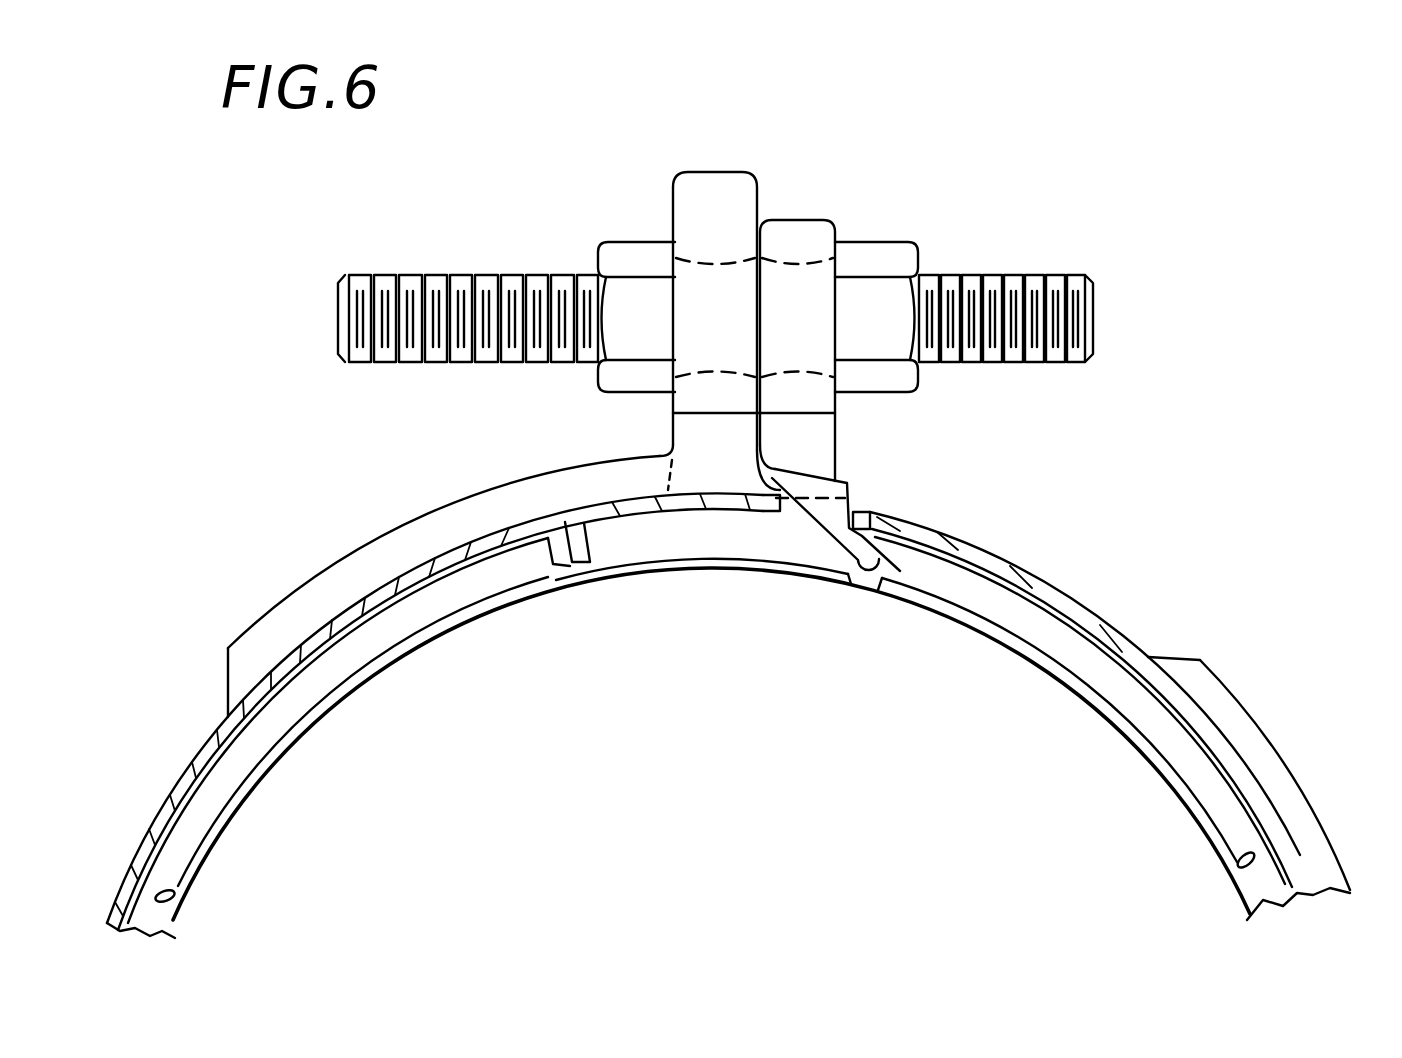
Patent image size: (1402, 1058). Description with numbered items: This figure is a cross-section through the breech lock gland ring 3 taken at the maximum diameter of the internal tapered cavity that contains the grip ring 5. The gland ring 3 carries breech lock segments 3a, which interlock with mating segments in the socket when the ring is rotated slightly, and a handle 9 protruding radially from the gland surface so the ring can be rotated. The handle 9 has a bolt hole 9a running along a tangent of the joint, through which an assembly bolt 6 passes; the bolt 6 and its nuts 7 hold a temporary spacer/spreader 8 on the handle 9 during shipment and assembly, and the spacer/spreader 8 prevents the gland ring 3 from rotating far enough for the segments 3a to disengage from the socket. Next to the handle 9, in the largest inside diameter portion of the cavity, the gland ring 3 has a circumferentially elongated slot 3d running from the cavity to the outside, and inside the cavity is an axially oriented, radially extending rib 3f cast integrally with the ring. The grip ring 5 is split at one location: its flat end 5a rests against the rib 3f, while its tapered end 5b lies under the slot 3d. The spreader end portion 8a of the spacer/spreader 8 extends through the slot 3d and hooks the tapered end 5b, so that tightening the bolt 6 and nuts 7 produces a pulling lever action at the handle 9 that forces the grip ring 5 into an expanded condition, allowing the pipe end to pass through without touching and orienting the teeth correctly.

The gland ring 3 is at (1000, 553).
The breech lock segments 3a is at (318, 603).
The slot 3d is at (777, 508).
The rib 3f is at (580, 565).
The grip ring 5 is at (1043, 630).
The flat end of split grip ring 5a is at (556, 572).
The tapered end of split grip ring 5b is at (892, 577).
The assembly bolt 6 is at (405, 292).
The nuts 7 is at (606, 248).
The spacer/spreader 8 is at (822, 232).
The spreader end portion 8a is at (853, 568).
The handle 9 is at (700, 190).
The bolt hole 9a is at (690, 275).